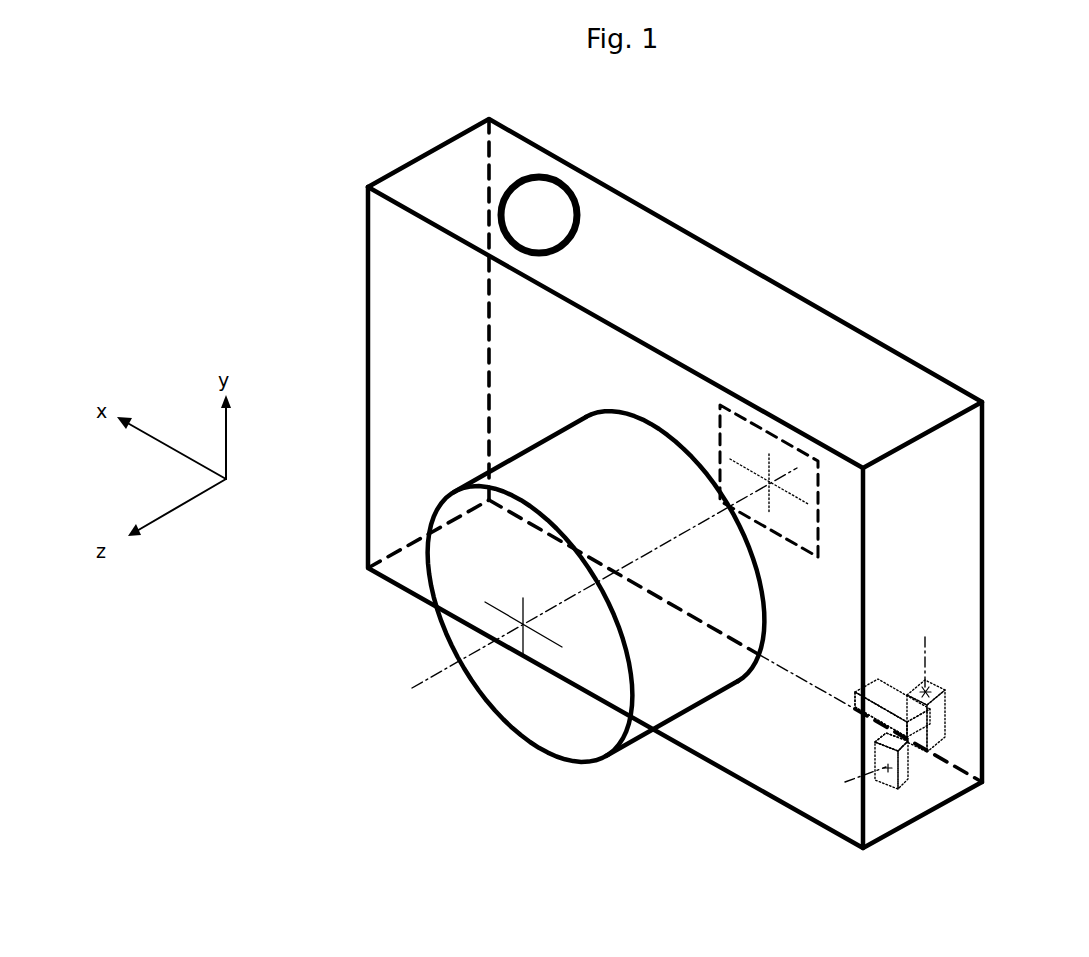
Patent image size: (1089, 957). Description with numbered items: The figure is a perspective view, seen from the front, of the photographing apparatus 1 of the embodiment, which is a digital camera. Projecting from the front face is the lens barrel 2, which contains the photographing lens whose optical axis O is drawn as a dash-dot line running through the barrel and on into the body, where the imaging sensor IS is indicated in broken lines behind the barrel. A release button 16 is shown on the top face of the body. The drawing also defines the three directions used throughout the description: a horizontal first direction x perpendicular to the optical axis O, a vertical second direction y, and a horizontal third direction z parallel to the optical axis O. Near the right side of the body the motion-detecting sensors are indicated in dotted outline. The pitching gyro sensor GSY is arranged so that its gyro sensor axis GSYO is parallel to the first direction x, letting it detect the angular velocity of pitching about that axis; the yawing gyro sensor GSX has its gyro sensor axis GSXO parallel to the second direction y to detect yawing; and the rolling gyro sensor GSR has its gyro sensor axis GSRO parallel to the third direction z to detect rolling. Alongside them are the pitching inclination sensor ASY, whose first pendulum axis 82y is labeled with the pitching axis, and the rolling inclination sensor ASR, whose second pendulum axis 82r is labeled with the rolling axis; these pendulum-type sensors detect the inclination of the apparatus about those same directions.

The photographing apparatus 1 is at (951, 384).
The lens barrel 2 is at (570, 428).
The release button 16 is at (580, 225).
The optical axis O is at (590, 587).
The imaging sensor IS is at (720, 447).
The pitching gyro sensor GSY is at (890, 700).
The gyro sensor axis of the pitching gyro sensor GSYO is at (806, 655).
The first pendulum axis 82y is at (840, 696).
The pitching inclination sensor ASY is at (854, 731).
The yawing gyro sensor GSX is at (946, 712).
The gyro sensor axis of the yawing gyro sensor GSXO is at (925, 656).
The rolling gyro sensor GSR is at (912, 768).
The gyro sensor axis of the rolling gyro sensor GSRO is at (822, 760).
The second pendulum axis 82r is at (854, 785).
The rolling inclination sensor ASR is at (896, 788).